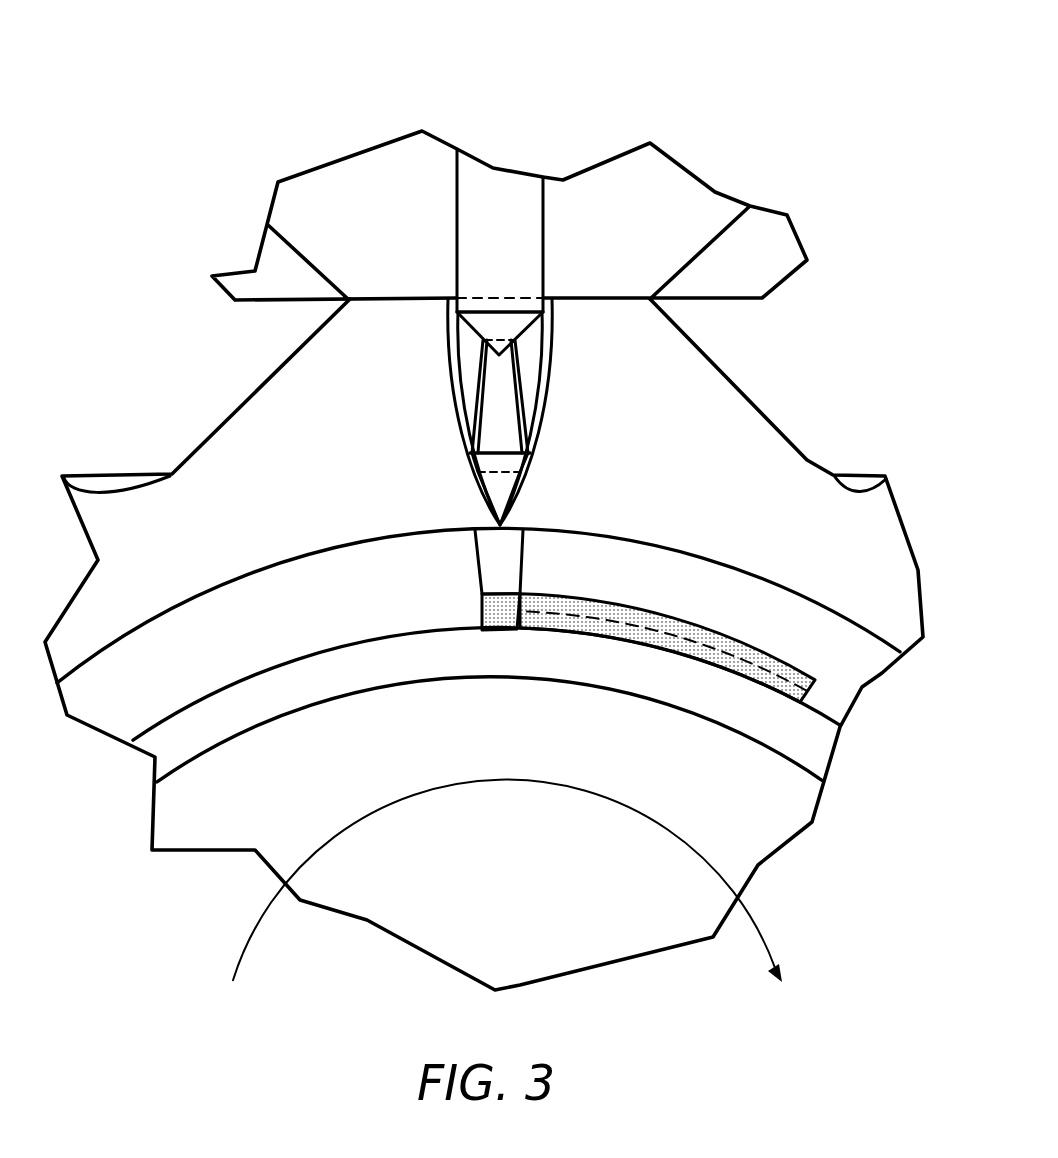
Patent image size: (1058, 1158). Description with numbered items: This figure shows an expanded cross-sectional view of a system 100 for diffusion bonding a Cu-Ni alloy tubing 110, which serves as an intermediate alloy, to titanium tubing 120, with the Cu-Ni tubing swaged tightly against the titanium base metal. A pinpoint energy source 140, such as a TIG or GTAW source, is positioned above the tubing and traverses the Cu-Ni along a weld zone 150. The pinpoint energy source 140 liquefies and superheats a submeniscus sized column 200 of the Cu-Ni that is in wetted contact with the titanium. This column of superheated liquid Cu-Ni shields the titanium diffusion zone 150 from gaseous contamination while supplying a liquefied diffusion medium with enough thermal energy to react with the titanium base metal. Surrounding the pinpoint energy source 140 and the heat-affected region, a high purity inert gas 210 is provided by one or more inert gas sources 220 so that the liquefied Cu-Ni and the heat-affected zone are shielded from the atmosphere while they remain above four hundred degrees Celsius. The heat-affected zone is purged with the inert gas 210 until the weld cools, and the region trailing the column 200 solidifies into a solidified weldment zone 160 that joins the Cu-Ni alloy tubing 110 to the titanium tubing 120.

The system 100 is at (219, 79).
The Cu-Ni alloy tubing 110 is at (880, 672).
The titanium tubing 120 is at (830, 742).
The pinpoint energy source 140 is at (502, 180).
The weld zone 150 is at (495, 634).
The solidified weldment zone 160 is at (710, 630).
The submeniscus sized column 200 is at (482, 565).
The high purity inert gas 210 is at (265, 383).
The inert gas source 220 is at (273, 262).